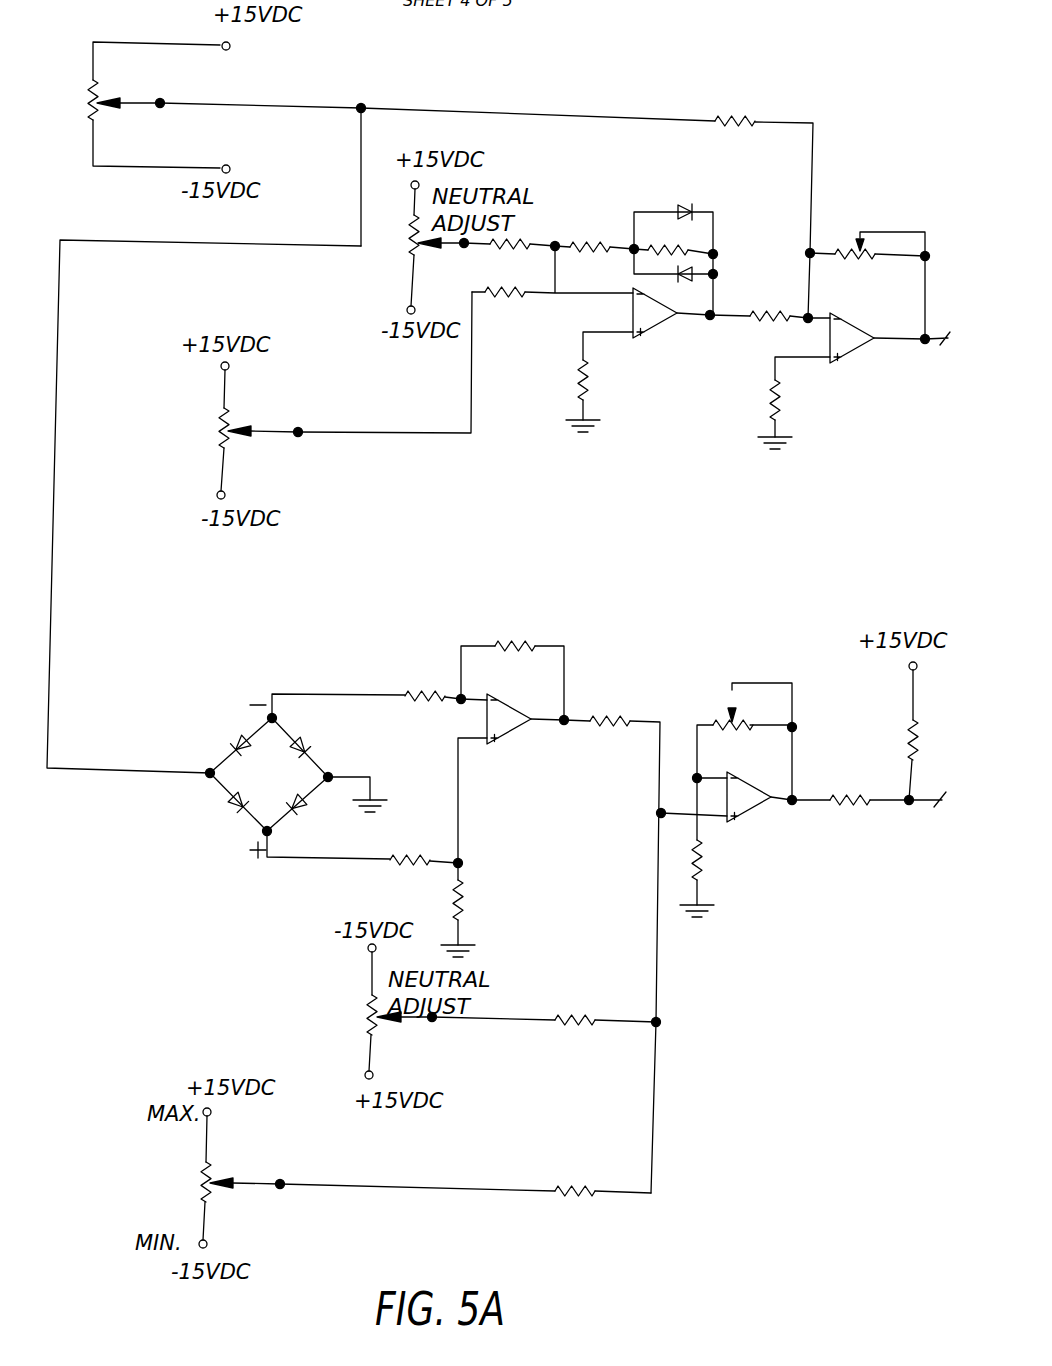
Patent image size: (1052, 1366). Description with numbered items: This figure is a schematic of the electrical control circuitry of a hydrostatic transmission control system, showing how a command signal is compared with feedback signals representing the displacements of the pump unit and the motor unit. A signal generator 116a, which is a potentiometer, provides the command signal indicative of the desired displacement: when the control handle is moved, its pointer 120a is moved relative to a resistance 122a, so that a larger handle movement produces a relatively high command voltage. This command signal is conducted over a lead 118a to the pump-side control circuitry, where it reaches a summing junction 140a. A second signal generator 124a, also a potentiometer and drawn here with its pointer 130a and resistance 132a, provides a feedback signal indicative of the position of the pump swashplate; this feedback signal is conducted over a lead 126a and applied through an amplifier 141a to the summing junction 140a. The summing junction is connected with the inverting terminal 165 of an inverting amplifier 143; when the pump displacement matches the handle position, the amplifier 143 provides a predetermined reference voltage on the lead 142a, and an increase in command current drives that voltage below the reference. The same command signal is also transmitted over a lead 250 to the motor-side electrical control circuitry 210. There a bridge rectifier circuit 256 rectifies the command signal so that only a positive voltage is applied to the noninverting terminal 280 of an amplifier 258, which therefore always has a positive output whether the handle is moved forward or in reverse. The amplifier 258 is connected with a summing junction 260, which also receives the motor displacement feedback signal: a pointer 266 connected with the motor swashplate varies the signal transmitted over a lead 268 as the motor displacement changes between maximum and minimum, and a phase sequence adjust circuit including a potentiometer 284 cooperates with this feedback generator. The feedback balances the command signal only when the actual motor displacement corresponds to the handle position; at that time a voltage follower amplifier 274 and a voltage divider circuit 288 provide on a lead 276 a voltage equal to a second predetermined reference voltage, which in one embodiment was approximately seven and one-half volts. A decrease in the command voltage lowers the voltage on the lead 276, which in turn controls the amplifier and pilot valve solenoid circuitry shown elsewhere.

The signal generator 116a is at (128, 34).
The pointer 120a is at (120, 102).
The resistance 122a is at (93, 104).
The lead 118a is at (597, 86).
The lead 250 is at (82, 202).
The lead 126a is at (471, 412).
The wiper 130a is at (279, 428).
The potentiometer 132a is at (222, 428).
The feedback signal generator 124a is at (258, 460).
The summing junction 140a is at (806, 316).
The operational amplifier 141a is at (655, 327).
The inverting terminal 165 is at (836, 314).
The inverting amplifier 143 is at (853, 344).
The output line 142a is at (948, 334).
The electrical control circuitry 210 is at (836, 593).
The bridge rectifier circuit 256 is at (205, 802).
The amplifier 258 is at (512, 717).
The noninverting terminal 280 is at (494, 735).
The summing junction 260 is at (661, 813).
The voltage follower amplifier 274 is at (752, 800).
The voltage divider circuit 288 is at (862, 776).
The lead 276 is at (938, 799).
The potentiometer 284 is at (370, 1015).
The pointer 266 is at (249, 1182).
The lead 268 is at (403, 1188).